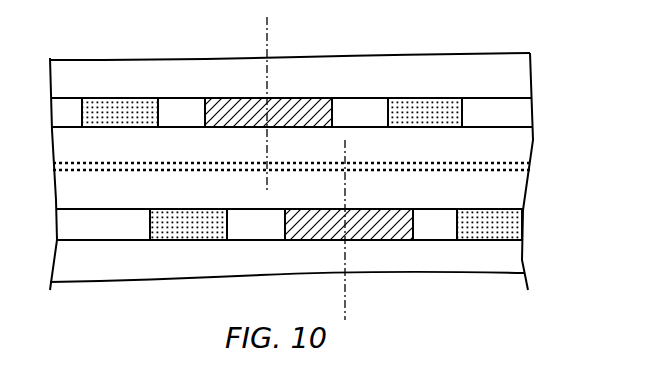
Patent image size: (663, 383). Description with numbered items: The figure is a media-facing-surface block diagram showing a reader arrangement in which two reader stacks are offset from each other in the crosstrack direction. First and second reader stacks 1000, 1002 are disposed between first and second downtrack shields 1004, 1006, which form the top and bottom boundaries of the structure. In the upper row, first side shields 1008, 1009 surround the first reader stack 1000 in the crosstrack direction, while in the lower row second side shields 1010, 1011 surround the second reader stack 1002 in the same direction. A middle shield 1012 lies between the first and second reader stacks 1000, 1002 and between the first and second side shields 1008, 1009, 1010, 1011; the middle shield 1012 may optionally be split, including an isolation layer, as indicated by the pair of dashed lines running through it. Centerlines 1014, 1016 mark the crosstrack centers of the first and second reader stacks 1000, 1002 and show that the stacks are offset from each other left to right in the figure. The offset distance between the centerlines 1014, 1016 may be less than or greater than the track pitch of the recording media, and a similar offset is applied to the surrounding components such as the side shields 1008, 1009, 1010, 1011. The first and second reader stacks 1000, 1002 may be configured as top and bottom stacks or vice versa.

The first reader stack 1000 is at (300, 106).
The second reader stack 1002 is at (375, 223).
The first downtrack shield 1004 is at (508, 63).
The second downtrack shield 1006 is at (509, 272).
The first side shield 1008 is at (110, 112).
The first side shield 1009 is at (428, 102).
The second side shield 1010 is at (185, 223).
The second side shield 1011 is at (487, 223).
The middle shield 1012 is at (547, 125).
The centerline 1014 is at (267, 42).
The centerline 1016 is at (347, 303).